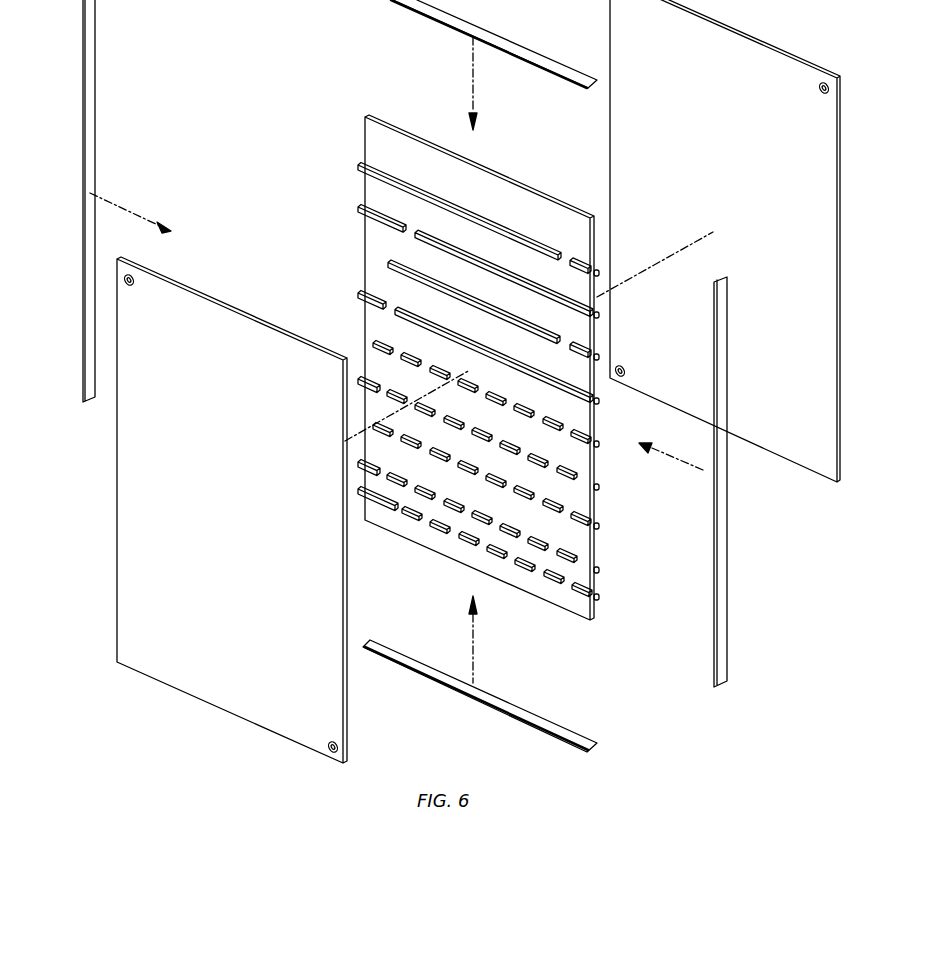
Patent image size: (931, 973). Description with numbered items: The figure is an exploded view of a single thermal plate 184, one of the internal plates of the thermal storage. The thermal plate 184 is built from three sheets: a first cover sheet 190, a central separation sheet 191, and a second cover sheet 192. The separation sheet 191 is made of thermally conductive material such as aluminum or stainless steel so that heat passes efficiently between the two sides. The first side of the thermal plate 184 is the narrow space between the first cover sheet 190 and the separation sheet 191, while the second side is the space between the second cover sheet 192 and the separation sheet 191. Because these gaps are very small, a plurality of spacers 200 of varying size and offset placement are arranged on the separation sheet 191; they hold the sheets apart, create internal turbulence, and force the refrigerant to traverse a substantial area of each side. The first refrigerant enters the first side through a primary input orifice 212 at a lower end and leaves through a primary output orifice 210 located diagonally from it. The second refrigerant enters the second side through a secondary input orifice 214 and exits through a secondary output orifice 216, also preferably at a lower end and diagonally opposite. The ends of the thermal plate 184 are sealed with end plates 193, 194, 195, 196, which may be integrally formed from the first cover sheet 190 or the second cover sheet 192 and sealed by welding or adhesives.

The thermal plate 184 is at (650, 758).
The first cover sheet 190 is at (233, 496).
The separation sheet 191 is at (365, 133).
The second cover sheet 192 is at (725, 180).
The end plate 193 is at (560, 724).
The end plate 194 is at (498, 36).
The end plate 195 is at (97, 70).
The end plate 196 is at (740, 565).
The spacers 200 is at (395, 188).
The primary output orifice 210 is at (134, 284).
The primary input orifice 212 is at (329, 751).
The secondary input orifice 214 is at (820, 91).
The secondary output orifice 216 is at (624, 375).